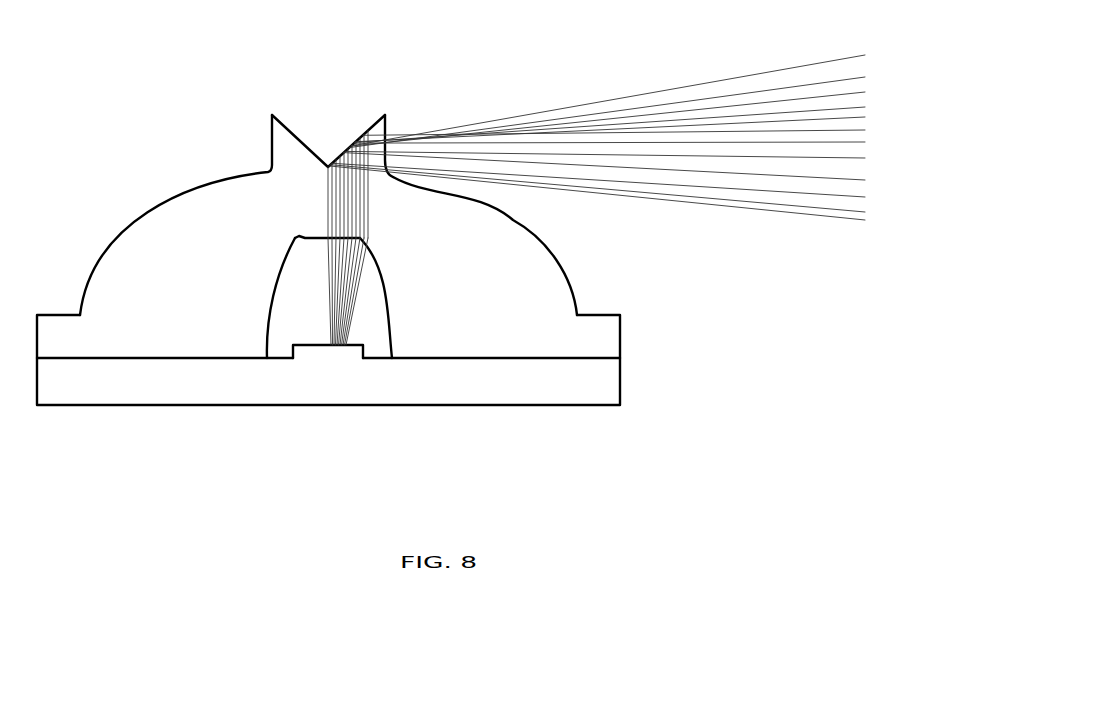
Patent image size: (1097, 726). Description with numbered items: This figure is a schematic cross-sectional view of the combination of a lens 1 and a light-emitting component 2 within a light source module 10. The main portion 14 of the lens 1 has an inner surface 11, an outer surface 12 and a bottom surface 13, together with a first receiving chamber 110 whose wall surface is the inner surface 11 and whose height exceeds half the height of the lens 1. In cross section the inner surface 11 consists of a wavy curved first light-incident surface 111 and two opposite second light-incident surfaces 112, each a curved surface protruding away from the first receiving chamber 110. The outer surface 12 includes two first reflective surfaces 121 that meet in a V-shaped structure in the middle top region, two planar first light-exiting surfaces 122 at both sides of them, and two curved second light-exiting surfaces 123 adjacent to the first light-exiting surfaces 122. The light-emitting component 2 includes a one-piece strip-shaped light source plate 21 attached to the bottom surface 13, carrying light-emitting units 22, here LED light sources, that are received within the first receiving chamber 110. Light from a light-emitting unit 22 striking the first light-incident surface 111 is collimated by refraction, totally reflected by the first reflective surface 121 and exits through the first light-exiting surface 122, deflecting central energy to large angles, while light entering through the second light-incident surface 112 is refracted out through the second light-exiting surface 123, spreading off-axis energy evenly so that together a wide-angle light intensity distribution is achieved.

The light source module 10 is at (108, 81).
The lens 1 is at (232, 217).
The main portion 14 is at (173, 287).
The outer surface 12 is at (562, 268).
The first reflective surface 121 is at (350, 137).
The first light-exiting surface 122 is at (392, 152).
The second light-exiting surface 123 is at (537, 232).
The light-emitting component 2 is at (140, 377).
The light source plate 21 is at (193, 377).
The bottom surface 13 is at (498, 362).
The light-emitting unit 22 is at (336, 356).
The inner surface 11 is at (265, 308).
The first receiving chamber 110 is at (280, 318).
The first light-incident surface 111 is at (318, 243).
The second light-incident surface 112 is at (382, 305).